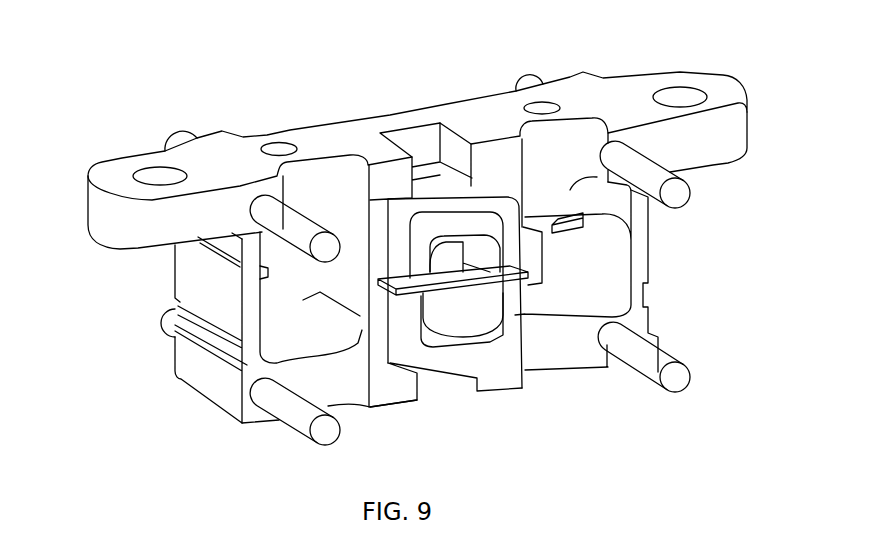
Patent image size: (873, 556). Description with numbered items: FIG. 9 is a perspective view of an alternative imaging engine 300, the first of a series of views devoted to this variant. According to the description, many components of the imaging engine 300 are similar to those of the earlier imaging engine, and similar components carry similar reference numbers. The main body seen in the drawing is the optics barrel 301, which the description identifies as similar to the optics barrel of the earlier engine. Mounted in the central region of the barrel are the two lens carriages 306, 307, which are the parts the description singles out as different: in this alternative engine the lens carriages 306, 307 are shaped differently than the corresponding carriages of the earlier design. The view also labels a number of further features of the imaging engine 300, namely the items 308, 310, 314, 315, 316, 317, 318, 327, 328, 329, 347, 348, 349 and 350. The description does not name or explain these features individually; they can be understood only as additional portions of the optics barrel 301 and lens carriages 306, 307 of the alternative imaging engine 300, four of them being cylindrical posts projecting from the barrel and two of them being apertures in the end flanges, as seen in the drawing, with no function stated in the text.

The imaging engine 300 is at (218, 78).
The optics barrel 301 is at (206, 382).
The lens carriage 306 is at (463, 222).
The lens carriage 307 is at (437, 358).
The dome contact 308 is at (443, 258).
The ball contact 310 is at (463, 308).
The cross bar 314 is at (523, 285).
The pin 315 is at (303, 228).
The pin 316 is at (300, 424).
The pin 317 is at (668, 172).
The pin 318 is at (657, 362).
The boss 327 is at (175, 131).
The boss 328 is at (168, 322).
The boss 329 is at (524, 86).
The left mounting ear 347 is at (107, 172).
The right mounting ear 348 is at (718, 92).
The mounting hole 349 is at (152, 176).
The mounting hole 350 is at (677, 97).